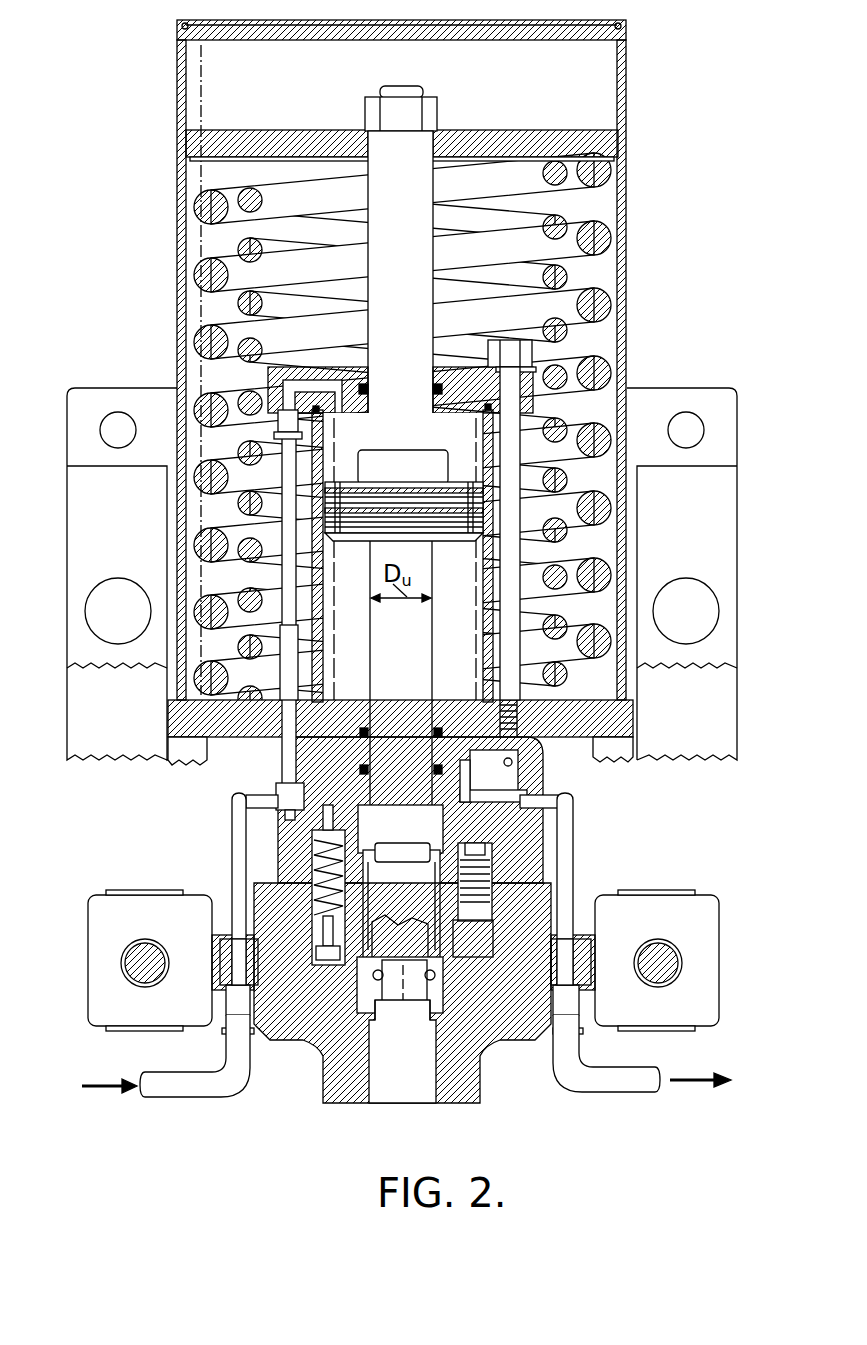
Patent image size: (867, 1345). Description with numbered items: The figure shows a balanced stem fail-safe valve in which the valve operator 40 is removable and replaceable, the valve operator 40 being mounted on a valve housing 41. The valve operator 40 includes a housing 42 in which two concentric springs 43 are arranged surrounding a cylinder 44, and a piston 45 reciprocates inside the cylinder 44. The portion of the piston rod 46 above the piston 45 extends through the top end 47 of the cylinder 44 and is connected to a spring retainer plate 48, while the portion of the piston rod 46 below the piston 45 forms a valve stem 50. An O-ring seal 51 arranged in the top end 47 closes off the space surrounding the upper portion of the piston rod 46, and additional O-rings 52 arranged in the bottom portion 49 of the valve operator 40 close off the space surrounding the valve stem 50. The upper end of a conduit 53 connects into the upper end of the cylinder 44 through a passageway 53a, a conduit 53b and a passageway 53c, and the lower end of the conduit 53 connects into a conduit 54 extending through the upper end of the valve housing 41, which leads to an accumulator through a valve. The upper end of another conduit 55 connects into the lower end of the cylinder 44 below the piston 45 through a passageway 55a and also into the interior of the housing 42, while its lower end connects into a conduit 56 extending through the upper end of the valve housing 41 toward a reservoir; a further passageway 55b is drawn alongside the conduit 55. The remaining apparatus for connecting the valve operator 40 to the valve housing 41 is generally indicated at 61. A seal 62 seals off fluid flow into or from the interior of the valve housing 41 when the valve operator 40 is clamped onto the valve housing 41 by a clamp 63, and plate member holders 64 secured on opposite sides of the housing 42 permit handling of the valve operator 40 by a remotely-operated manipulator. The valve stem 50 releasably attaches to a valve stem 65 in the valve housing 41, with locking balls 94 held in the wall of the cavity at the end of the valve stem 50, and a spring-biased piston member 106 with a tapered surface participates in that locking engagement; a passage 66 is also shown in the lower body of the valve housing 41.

The valve operator 40 is at (640, 97).
The valve housing 41 is at (472, 1087).
The housing 42 is at (185, 130).
The concentric springs 43 is at (215, 215).
The cylinder 44 is at (488, 523).
The piston 45 is at (455, 522).
The piston rod 46 is at (420, 262).
The top end 47 is at (522, 382).
The spring retainer plate 48 is at (520, 145).
The bottom portion 49 is at (513, 868).
The valve stem 50 is at (420, 662).
The O-ring seal 51 is at (437, 390).
The O-rings 52 is at (437, 768).
The conduit 53 is at (236, 823).
The passageway 53a is at (290, 765).
The conduit 53b is at (287, 540).
The passageway 53c is at (280, 383).
The conduit 54 is at (192, 1085).
The conduit 55 is at (560, 826).
The passageway 55a is at (513, 798).
The outlet conduit passage 55b is at (512, 761).
The conduit 56 is at (628, 1082).
The connecting apparatus 61 is at (403, 911).
The seal 62 is at (287, 975).
The clamp 63 is at (107, 922).
The plate member holders 64 is at (91, 552).
The valve stem 65 is at (416, 1060).
The passage 66 is at (404, 1084).
The locking balls 94 is at (322, 1036).
The piston member 106 is at (491, 926).